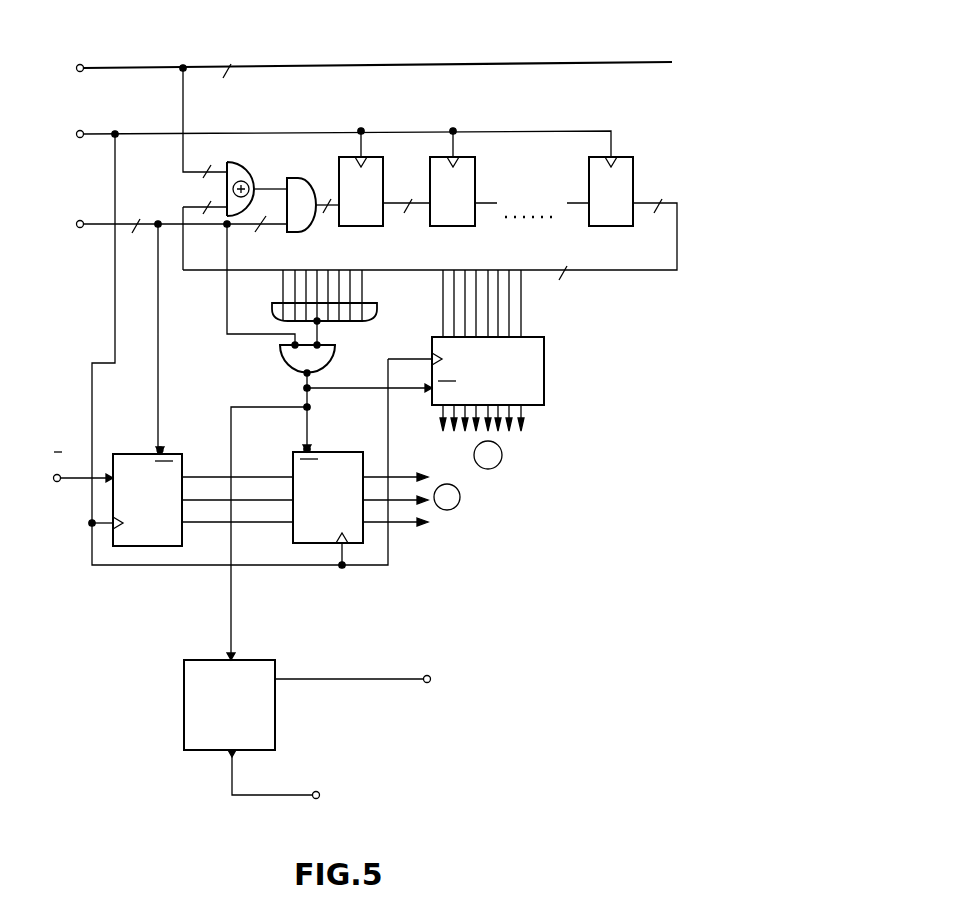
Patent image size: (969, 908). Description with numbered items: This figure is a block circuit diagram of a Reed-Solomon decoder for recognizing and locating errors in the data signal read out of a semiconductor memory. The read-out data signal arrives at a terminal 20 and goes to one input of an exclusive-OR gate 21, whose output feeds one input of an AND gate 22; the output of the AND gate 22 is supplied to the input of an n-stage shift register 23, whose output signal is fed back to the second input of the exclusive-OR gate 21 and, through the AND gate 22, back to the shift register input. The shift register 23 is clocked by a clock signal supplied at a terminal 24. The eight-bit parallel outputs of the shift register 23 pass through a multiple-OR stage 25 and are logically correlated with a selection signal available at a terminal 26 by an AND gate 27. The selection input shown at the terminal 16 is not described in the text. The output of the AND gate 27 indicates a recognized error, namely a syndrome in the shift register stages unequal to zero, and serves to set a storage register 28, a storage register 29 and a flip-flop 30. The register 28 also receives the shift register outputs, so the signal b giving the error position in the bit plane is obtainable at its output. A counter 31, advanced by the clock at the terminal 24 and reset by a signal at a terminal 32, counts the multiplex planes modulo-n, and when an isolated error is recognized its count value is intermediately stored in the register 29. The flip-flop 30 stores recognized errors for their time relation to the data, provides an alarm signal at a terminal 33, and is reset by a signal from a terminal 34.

The terminal 20 is at (363, 43).
The terminal 24 is at (330, 330).
The select input terminal 16 is at (172, 325).
The exclusive-OR gate 21 is at (243, 163).
The AND gate 22 is at (290, 178).
The n-stage shift register 23 is at (365, 226).
The multiple-OR stage 25 is at (377, 312).
The terminal 26 is at (307, 388).
The AND gate 27 is at (333, 355).
The storage register 28 is at (544, 347).
The storage register 29 is at (345, 455).
The flip-flop 30 is at (192, 658).
The counter 31 is at (133, 458).
The terminal 32 is at (67, 472).
The terminal 33 is at (367, 680).
The terminal 34 is at (322, 781).